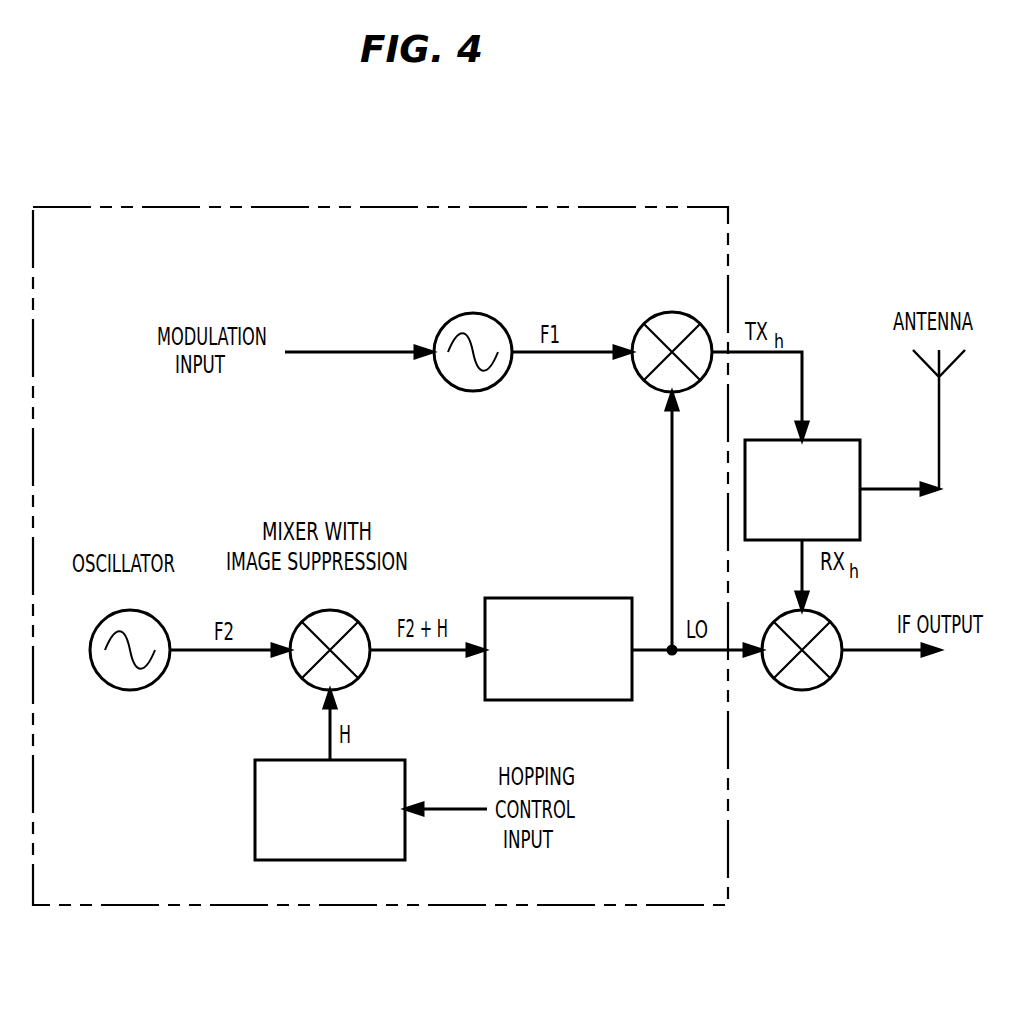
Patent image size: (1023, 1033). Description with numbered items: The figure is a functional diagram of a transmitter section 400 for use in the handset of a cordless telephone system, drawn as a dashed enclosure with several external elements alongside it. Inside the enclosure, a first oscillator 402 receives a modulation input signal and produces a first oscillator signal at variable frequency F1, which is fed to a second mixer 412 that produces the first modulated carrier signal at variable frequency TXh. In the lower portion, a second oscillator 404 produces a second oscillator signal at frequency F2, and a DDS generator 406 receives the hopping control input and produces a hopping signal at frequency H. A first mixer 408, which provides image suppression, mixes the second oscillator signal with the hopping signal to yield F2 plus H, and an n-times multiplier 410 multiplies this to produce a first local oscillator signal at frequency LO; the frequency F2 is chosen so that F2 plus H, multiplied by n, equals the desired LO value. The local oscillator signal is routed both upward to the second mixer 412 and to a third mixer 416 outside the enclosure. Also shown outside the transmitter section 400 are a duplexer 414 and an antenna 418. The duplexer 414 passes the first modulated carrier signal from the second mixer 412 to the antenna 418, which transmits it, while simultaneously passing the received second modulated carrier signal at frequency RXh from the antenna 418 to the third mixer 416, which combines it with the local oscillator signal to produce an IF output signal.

The transmitter section 400 is at (192, 207).
The first oscillator 402 is at (448, 316).
The second oscillator 404 is at (168, 665).
The DDS generator 406 is at (255, 810).
The first mixer 408 is at (368, 665).
The n-times multiplier 410 is at (580, 598).
The second mixer 412 is at (648, 316).
The duplexer 414 is at (844, 440).
The third mixer 416 is at (838, 668).
The antenna 418 is at (944, 396).